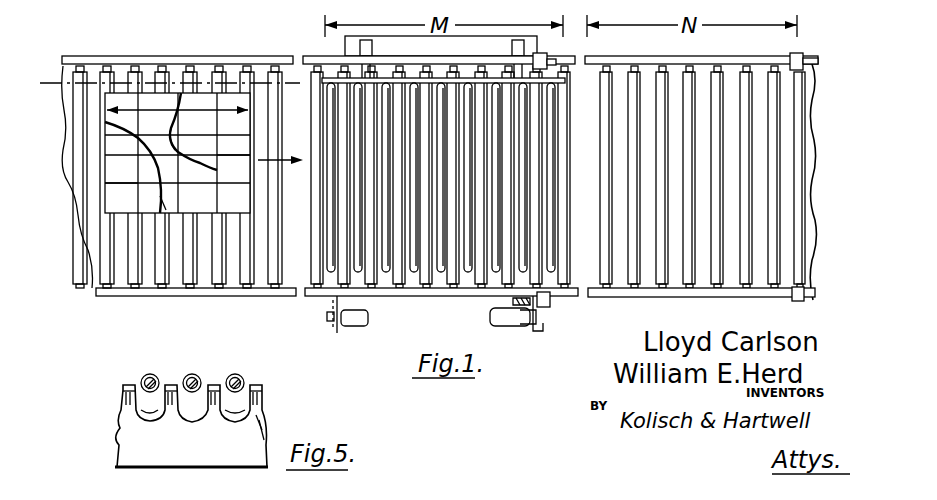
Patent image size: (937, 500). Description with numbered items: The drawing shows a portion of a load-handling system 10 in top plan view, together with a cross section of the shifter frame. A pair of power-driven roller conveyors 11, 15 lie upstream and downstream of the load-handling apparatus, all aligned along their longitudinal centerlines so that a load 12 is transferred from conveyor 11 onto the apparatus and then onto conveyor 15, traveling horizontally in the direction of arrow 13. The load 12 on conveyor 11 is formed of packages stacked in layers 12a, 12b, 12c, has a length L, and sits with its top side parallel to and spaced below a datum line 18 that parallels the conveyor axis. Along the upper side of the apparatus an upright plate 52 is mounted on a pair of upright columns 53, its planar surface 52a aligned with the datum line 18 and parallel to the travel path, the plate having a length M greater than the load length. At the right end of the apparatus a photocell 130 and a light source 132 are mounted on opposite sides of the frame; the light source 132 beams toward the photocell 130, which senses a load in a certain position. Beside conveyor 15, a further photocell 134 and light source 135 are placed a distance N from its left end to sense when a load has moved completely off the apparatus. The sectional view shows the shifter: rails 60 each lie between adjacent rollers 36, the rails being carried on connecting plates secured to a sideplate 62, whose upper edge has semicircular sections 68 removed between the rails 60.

In FIG. 1, the load-handling system 10 is at (92, 50).
In FIG. 1, the power-driven roller conveyor 11 is at (122, 302).
In FIG. 1, the load 12 is at (80, 166).
In FIG. 1, the layer 12a is at (110, 198).
In FIG. 1, the layer 12b is at (167, 198).
In FIG. 1, the layer 12c is at (242, 152).
In FIG. 1, the arrow 13 is at (284, 165).
In FIG. 1, the power-driven roller conveyor 15 is at (648, 302).
In FIG. 1, the datum line 18 is at (50, 86).
In FIG. 1, the upright plate 52 is at (418, 38).
In FIG. 1, the planar surface 52a is at (467, 79).
In FIG. 1, the upright column 53 is at (373, 45).
In FIG. 1, the photocell 130 is at (548, 304).
In FIG. 1, the light source 132 is at (546, 56).
In FIG. 1, the photocell 134 is at (806, 302).
In FIG. 1, the light source 135 is at (805, 58).
In FIG. 5, the roller 36 is at (155, 408).
In FIG. 5, the rail 60 is at (258, 377).
In FIG. 5, the sideplate 62 is at (117, 447).
In FIG. 5, the semicircular section 68 is at (200, 427).